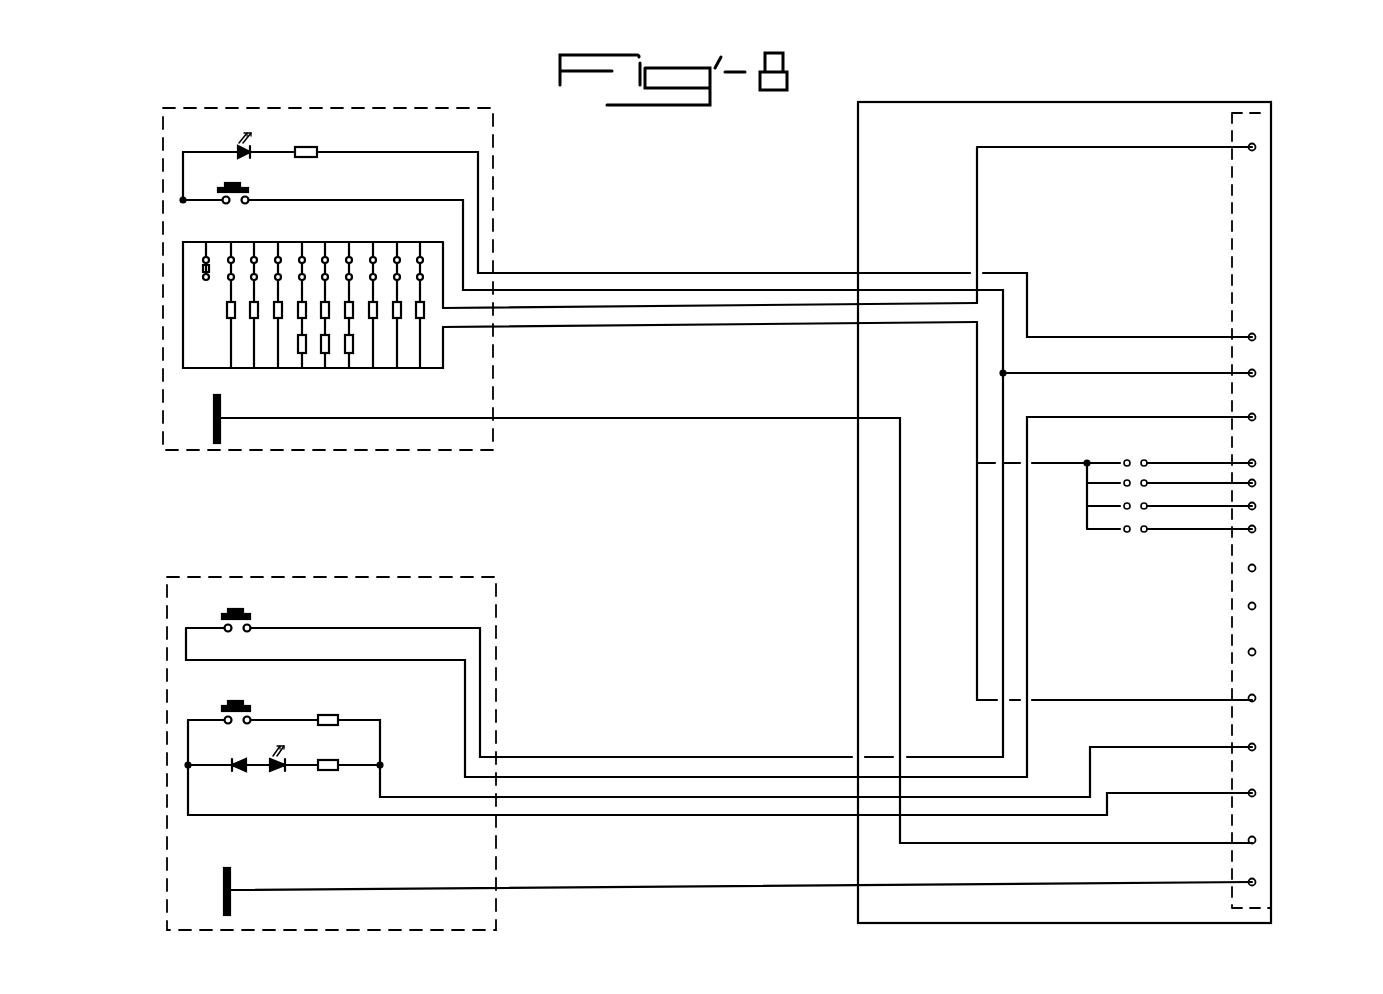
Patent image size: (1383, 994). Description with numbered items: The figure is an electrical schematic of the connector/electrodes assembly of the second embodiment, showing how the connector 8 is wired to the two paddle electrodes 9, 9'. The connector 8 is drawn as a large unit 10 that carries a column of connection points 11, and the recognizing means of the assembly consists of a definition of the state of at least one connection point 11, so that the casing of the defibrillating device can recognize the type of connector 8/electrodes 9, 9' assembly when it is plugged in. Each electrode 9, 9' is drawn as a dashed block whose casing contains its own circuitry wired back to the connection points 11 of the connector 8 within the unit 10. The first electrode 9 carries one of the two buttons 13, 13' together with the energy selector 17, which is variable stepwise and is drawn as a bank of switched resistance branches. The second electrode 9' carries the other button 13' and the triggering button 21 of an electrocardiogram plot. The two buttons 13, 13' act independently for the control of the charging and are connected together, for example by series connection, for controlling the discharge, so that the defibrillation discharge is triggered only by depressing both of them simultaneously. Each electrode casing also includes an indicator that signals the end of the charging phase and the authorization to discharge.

The connector 8 is at (856, 540).
The electrode 9 is at (328, 241).
The electrode 9' is at (331, 721).
The evaluation unit housing 10 is at (856, 605).
The connection point 11 is at (1256, 528).
The button 13 is at (209, 115).
The button 13' is at (253, 572).
The energy selector 17 is at (207, 312).
The triggering button 21 is at (240, 702).